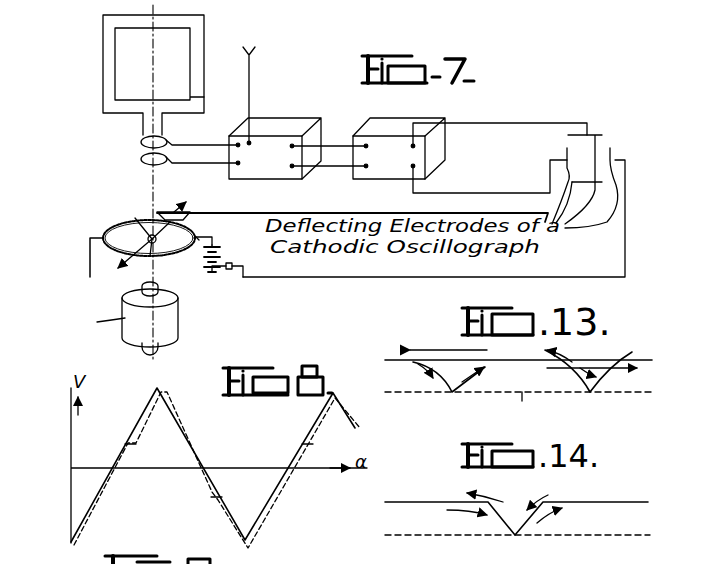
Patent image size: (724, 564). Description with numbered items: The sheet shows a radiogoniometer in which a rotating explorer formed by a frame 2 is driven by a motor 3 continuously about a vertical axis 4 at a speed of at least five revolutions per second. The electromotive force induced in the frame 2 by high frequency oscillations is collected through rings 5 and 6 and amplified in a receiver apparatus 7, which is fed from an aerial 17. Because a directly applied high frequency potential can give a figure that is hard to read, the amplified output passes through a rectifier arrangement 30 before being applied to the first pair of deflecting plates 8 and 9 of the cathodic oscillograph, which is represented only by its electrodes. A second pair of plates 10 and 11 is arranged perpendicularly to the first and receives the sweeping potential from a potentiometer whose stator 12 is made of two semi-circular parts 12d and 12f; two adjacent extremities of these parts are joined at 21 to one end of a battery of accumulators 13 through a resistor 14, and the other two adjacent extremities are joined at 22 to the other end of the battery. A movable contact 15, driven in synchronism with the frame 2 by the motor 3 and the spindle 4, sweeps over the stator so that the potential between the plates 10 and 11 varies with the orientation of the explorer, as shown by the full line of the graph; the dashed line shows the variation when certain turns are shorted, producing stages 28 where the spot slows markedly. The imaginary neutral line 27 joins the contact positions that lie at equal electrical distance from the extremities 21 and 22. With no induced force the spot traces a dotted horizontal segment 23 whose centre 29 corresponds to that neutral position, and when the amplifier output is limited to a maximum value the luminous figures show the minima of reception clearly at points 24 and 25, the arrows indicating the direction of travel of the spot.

In FIG. 7, the frame 2 is at (197, 33).
In FIG. 7, the motor 3 is at (168, 318).
In FIG. 7, the vertical axis 4 is at (157, 190).
In FIG. 7, the ring 5 is at (141, 142).
In FIG. 7, the ring 6 is at (141, 159).
In FIG. 7, the receiver apparatus 7 is at (265, 178).
In FIG. 7, the plate 8 is at (597, 135).
In FIG. 7, the plate 9 is at (585, 224).
In FIG. 7, the plate 10 is at (565, 151).
In FIG. 7, the plate 11 is at (613, 152).
In FIG. 7, the stator of the potentiometer 12 is at (196, 230).
In FIG. 7, the semi-circular part 12f is at (121, 225).
In FIG. 7, the semi-circular part 12d is at (160, 250).
In FIG. 7, the battery of accumulators 13 is at (226, 254).
In FIG. 7, the resistor 14 is at (229, 272).
In FIG. 7, the movable contact 15 is at (151, 235).
In FIG. 7, the antenna 17 is at (251, 80).
In FIG. 7, the connection point 21 is at (194, 249).
In FIG. 7, the connection point 22 is at (110, 236).
In FIG. 13, the horizontal segment of straight line 23 is at (640, 392).
In FIG. 14, the horizontal segment of straight line 23 is at (614, 536).
In FIG. 13, the position of minimum of reception 24 is at (452, 394).
In FIG. 14, the position of minimum of reception 24 is at (515, 537).
In FIG. 13, the position of minimum of reception 25 is at (590, 394).
In FIG. 14, the position of minimum of reception 25 is at (520, 537).
In FIG. 7, the neutral line 27 is at (185, 214).
In FIG. 8, the stages 28 is at (128, 440).
In FIG. 13, the centre of the segment 29 is at (533, 407).
In FIG. 14, the centre of the segment 29 is at (512, 536).
In FIG. 7, the rectifier arrangement 30 is at (382, 175).